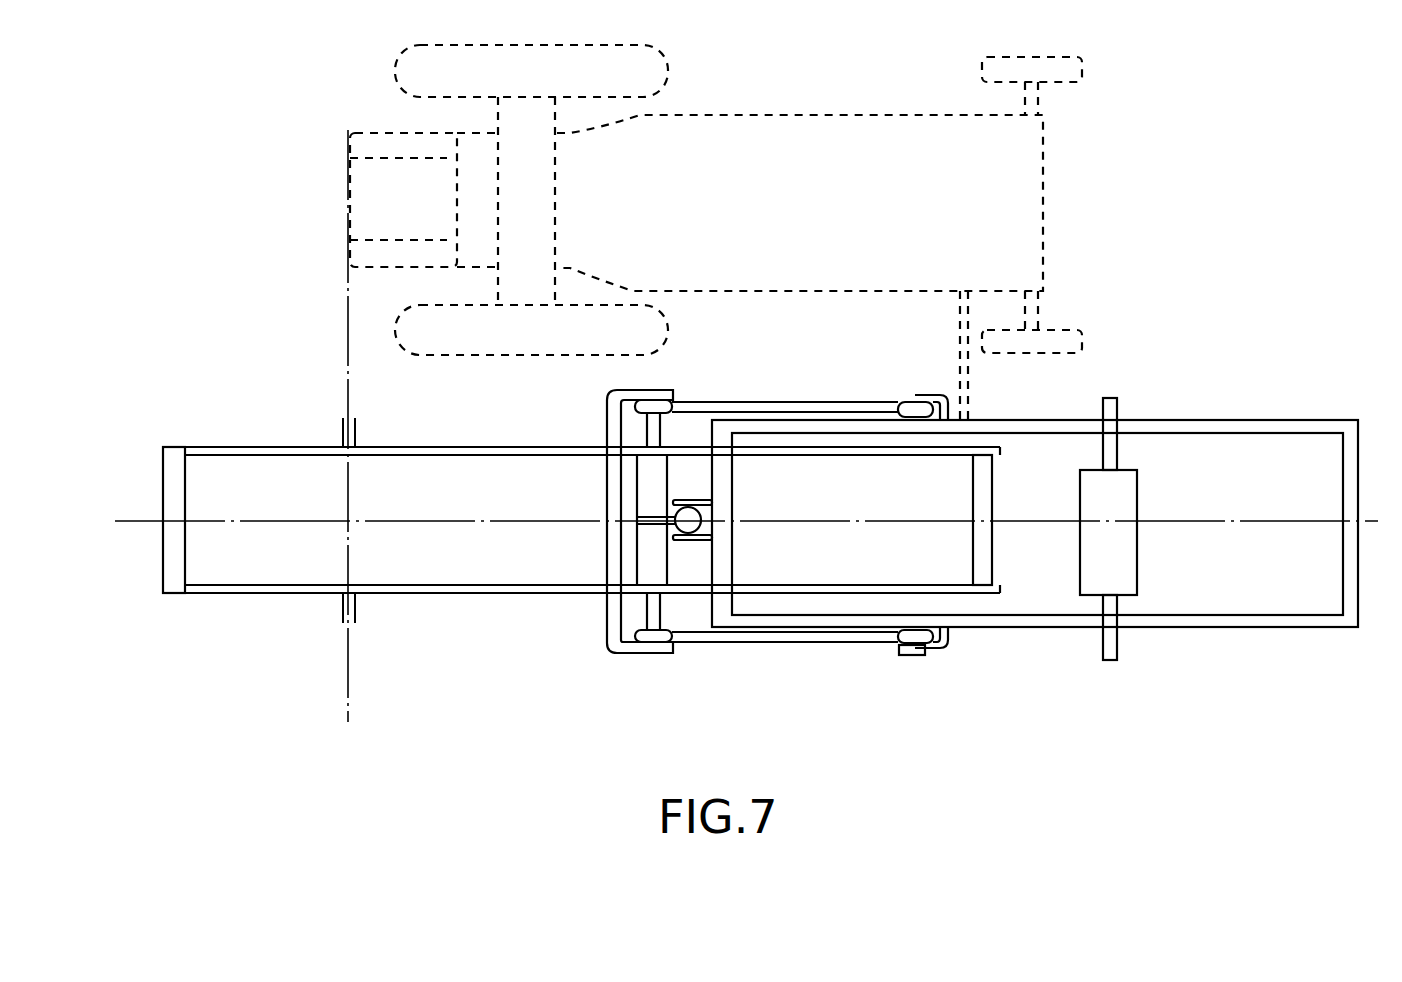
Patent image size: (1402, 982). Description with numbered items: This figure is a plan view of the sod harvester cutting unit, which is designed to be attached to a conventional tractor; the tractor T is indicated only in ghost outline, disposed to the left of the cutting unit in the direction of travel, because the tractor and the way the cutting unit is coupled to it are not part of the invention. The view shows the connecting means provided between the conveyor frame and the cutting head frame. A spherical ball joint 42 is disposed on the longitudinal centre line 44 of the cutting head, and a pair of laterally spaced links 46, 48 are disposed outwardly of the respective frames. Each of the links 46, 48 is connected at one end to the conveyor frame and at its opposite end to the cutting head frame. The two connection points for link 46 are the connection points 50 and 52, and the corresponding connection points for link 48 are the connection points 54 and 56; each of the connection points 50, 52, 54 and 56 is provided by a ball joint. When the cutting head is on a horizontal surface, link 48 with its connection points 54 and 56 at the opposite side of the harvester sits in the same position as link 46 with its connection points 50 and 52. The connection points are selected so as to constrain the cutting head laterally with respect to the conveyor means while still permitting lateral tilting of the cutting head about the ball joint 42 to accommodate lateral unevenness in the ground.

The tractor T is at (733, 142).
The spherical ball joint 42 is at (695, 518).
The longitudinal centre line of the cutting head 44 is at (1208, 522).
The link 46 is at (778, 642).
The link 48 is at (775, 402).
The connection point 50 is at (662, 645).
The connection point 52 is at (925, 643).
The connection point 54 is at (663, 405).
The connection point 56 is at (903, 405).